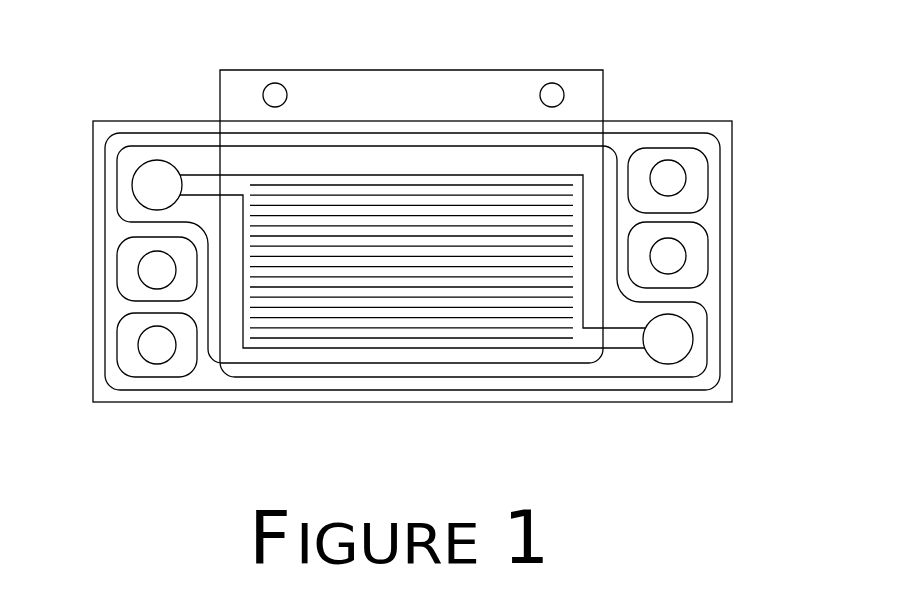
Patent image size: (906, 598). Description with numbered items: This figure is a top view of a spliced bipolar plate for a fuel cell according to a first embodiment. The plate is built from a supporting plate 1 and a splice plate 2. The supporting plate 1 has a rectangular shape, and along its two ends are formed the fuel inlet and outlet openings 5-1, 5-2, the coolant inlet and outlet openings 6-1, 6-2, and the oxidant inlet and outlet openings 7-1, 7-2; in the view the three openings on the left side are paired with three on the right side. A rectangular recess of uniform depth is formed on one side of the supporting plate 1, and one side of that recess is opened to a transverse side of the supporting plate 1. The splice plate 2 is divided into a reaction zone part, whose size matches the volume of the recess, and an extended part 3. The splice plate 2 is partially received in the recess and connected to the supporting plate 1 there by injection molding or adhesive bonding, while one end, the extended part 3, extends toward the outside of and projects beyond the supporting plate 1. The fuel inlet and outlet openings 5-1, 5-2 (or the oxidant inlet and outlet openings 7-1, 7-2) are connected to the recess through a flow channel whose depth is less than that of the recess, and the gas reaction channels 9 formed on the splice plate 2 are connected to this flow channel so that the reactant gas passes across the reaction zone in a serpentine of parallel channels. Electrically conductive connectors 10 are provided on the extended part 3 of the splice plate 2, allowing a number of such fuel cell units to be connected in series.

The supporting plate 1 is at (106, 393).
The splice plate 2 is at (257, 355).
The extended part 3 is at (230, 87).
The fuel inlet opening 5-1 is at (150, 178).
The fuel outlet opening 5-2 is at (678, 340).
The coolant inlet opening 6-1 is at (670, 256).
The coolant outlet opening 6-2 is at (150, 270).
The oxidant inlet opening 7-1 is at (675, 179).
The oxidant outlet opening 7-2 is at (148, 347).
The gas reaction channels 9 is at (476, 323).
The electrically conductive connectors 10 is at (552, 95).